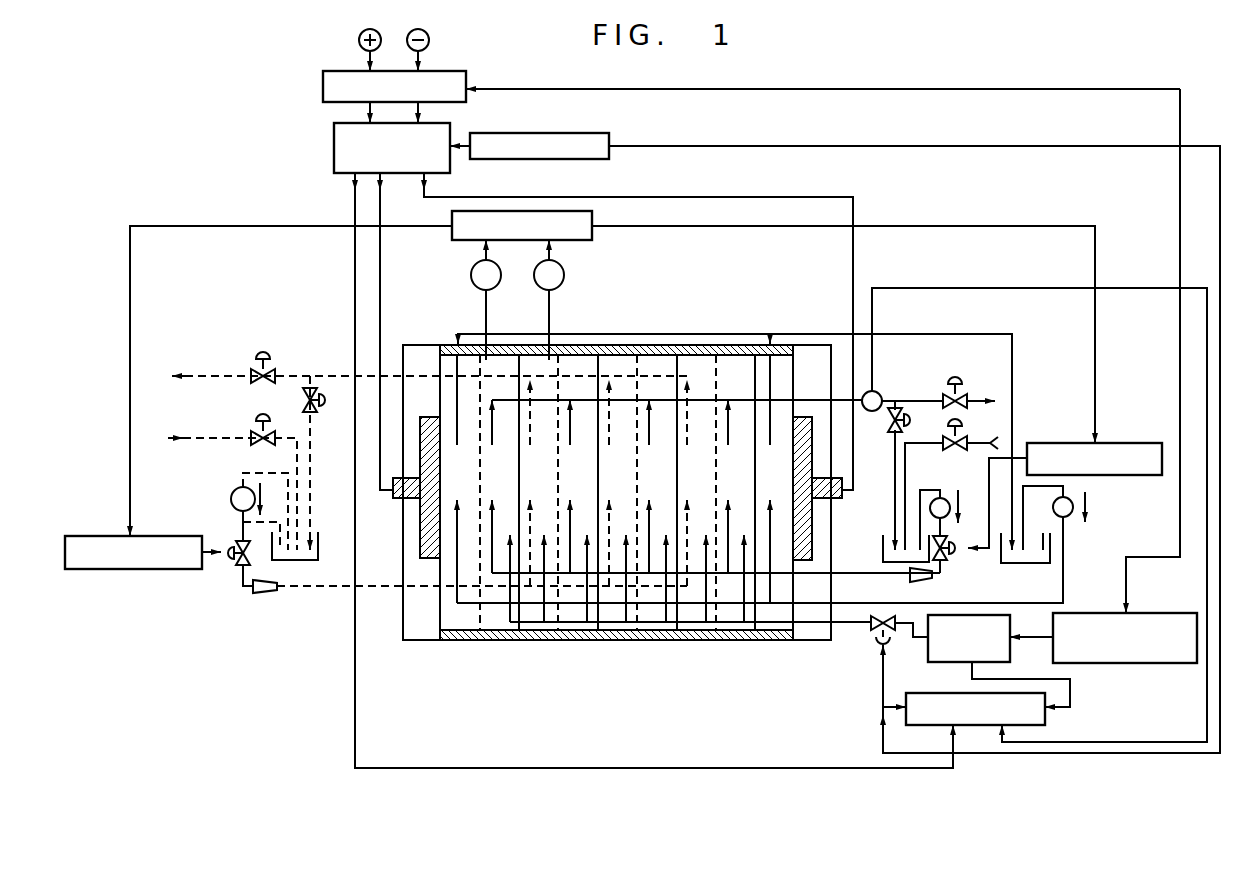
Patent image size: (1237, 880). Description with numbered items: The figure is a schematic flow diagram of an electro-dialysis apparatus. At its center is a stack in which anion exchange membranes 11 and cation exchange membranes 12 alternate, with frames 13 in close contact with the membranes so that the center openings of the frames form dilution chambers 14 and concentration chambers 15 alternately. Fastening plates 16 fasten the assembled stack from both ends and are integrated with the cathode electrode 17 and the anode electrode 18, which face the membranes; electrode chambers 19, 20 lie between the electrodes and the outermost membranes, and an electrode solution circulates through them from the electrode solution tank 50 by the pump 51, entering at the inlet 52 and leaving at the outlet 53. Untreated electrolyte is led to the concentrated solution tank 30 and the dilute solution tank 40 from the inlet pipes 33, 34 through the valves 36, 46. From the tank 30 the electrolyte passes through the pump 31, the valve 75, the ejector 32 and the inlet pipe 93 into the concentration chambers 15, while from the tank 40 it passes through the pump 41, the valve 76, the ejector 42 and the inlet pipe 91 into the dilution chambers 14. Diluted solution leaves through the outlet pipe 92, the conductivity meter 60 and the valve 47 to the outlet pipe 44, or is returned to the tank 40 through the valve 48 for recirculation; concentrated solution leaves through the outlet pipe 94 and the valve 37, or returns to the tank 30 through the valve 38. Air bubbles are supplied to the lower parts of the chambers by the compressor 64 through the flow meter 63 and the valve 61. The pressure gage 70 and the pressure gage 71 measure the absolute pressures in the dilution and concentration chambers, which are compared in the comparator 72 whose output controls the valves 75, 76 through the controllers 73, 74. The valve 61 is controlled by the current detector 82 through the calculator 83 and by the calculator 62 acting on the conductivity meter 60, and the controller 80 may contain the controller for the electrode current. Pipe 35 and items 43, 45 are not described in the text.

The anion exchange membranes 11 is at (478, 368).
The cation exchange membranes 12 is at (522, 366).
The frames 13 is at (497, 341).
The dilution chambers 14 is at (672, 486).
The concentration chambers 15 is at (615, 483).
The fastening plates 16 is at (421, 346).
The cathode electrode 17 is at (432, 415).
The anode electrode 18 is at (812, 430).
The electrode chamber 19 is at (457, 479).
The electrode chamber 20 is at (773, 479).
The concentrated solution tank 30 is at (318, 536).
The pump 31 is at (233, 492).
The ejector 32 is at (261, 594).
The inlet pipe 33 is at (221, 438).
The inlet pipe / outlet pipe 34 is at (232, 372).
The return pipe 35 is at (310, 490).
The valve 36 is at (260, 421).
The valve 37 is at (270, 357).
The valve 38 is at (330, 402).
The dilute solution tank 40 is at (883, 548).
The pump 41 is at (943, 497).
The ejector 42 is at (920, 583).
The drain valve 43 is at (951, 493).
The outlet pipe 44 is at (967, 400).
The anolyte return pipe 45 is at (894, 496).
The valve 46 is at (968, 440).
The valve 47 is at (961, 369).
The valve 48 is at (886, 416).
The electrode solution tank 50 is at (1015, 563).
The pump 51 is at (1070, 515).
The inlet 52 is at (878, 592).
The outlet 53 is at (912, 337).
The conductivity meter 60 is at (888, 384).
The valve 61 is at (877, 643).
The calculator 62 is at (933, 725).
The flow meter 63 is at (928, 656).
The compressor 64 is at (1145, 613).
The pressure gage 70 is at (471, 276).
The pressure gage 71 is at (564, 276).
The comparator 72 is at (592, 233).
The controller 73 is at (174, 570).
The controller 74 is at (1108, 443).
The valve 75 is at (229, 562).
The valve 76 is at (958, 556).
The controller 80 is at (323, 92).
The current detector 82 is at (334, 156).
The calculator 83 is at (575, 133).
The inlet pipe 91 is at (863, 576).
The outlet pipe 92 is at (826, 405).
The inlet pipe 93 is at (363, 590).
The outlet pipe 94 is at (391, 378).